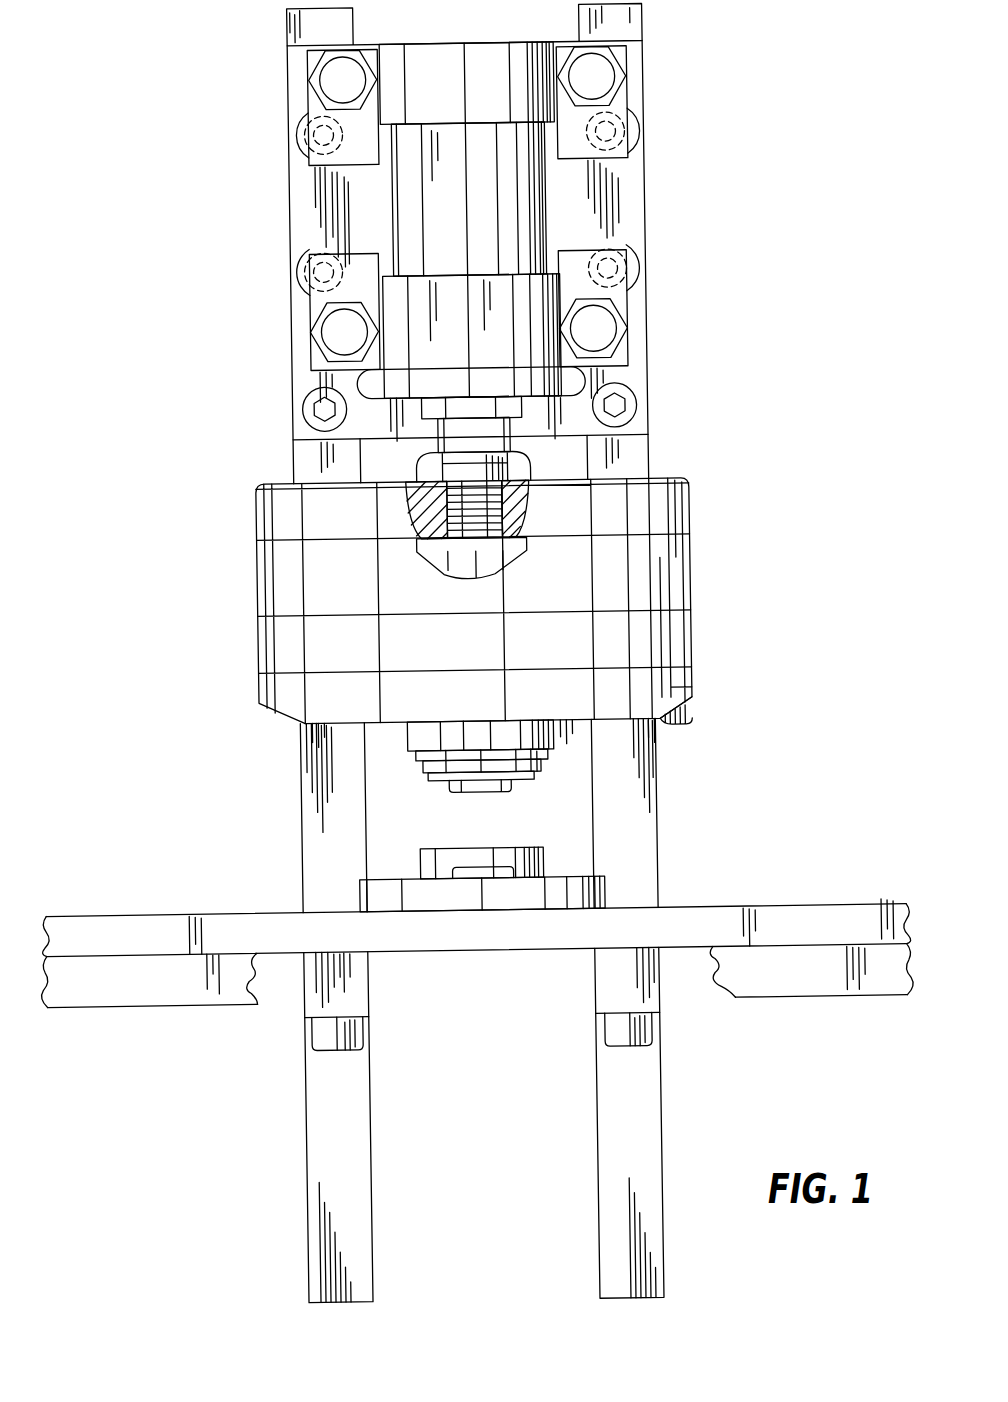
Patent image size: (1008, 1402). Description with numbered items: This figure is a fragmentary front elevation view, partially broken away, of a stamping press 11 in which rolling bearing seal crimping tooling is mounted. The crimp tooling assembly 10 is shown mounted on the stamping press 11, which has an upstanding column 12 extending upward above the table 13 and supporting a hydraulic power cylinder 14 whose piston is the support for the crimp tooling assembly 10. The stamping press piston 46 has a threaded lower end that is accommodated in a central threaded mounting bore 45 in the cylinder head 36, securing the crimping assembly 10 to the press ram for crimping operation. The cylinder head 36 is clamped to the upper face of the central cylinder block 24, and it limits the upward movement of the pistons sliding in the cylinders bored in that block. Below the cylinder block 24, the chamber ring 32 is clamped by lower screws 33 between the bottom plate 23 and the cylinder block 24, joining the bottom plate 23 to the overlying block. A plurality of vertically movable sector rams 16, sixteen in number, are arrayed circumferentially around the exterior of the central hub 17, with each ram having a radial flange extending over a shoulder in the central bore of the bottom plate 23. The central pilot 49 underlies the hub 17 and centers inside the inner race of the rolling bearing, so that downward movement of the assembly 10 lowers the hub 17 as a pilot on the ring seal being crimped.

The crimp tooling assembly 10 is at (246, 526).
The stamping press 11 is at (287, 249).
The upstanding column 12 is at (305, 343).
The table 13 is at (770, 905).
The hydraulic power cylinder 14 is at (527, 211).
The sector rams 16 is at (493, 735).
The central hub 17 is at (433, 782).
The bottom plate 23 is at (684, 694).
The central cylinder block 24 is at (668, 587).
The chamber ring 32 is at (675, 650).
The lower screws 33 is at (684, 719).
The cylinder head 36 is at (675, 511).
The central threaded mounting bore 45 is at (524, 524).
The stamping press piston 46 is at (518, 497).
The central pilot 49 is at (484, 793).